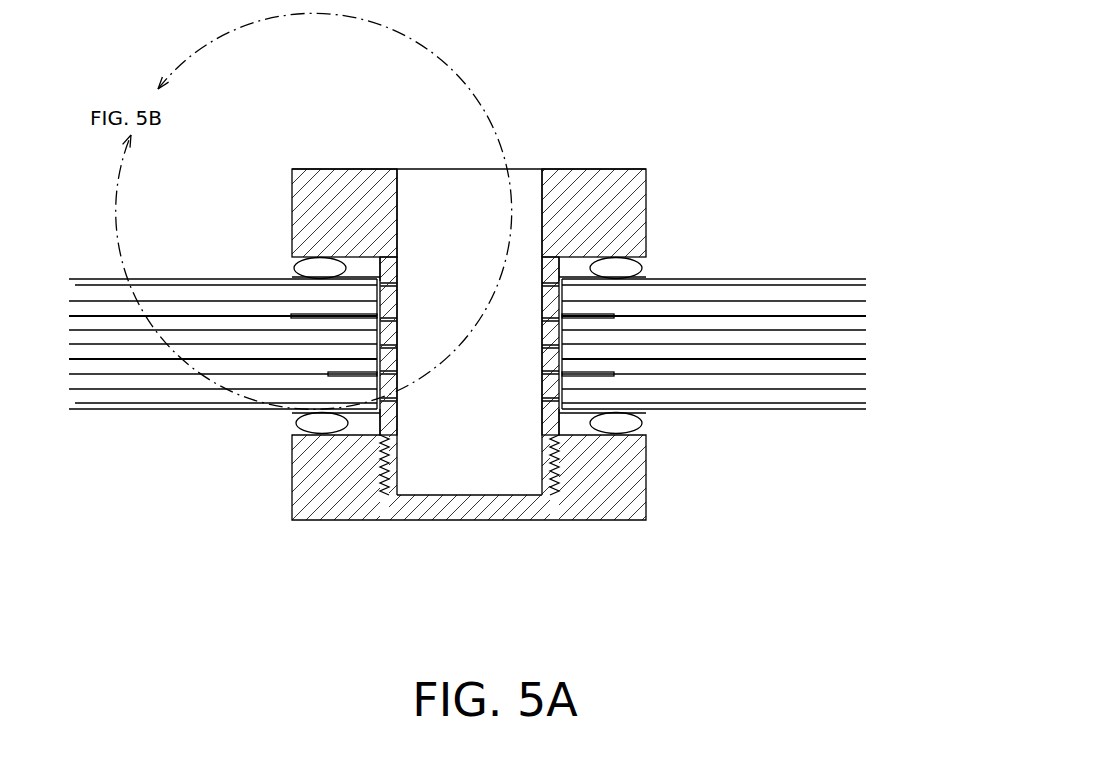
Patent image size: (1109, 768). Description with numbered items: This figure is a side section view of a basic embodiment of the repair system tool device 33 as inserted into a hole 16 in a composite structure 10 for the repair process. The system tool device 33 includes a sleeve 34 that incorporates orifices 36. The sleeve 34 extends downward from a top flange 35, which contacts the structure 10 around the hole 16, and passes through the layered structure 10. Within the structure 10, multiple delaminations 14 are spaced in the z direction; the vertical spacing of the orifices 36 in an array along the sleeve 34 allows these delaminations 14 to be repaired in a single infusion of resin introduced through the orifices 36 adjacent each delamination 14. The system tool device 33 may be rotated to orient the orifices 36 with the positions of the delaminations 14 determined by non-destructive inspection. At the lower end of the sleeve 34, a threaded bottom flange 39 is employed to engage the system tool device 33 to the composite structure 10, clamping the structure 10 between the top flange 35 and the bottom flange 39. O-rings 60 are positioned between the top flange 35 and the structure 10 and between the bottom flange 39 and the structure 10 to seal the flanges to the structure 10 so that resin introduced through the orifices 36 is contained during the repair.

The composite structure 10 is at (737, 279).
The delaminations 14 is at (302, 314).
The hole 16 is at (562, 352).
The repair system tool device 33 is at (664, 150).
The sleeve 34 is at (397, 332).
The top flange 35 is at (318, 190).
The orifices 36 is at (397, 313).
The threaded bottom flange 39 is at (348, 505).
The o-rings 60 is at (320, 266).